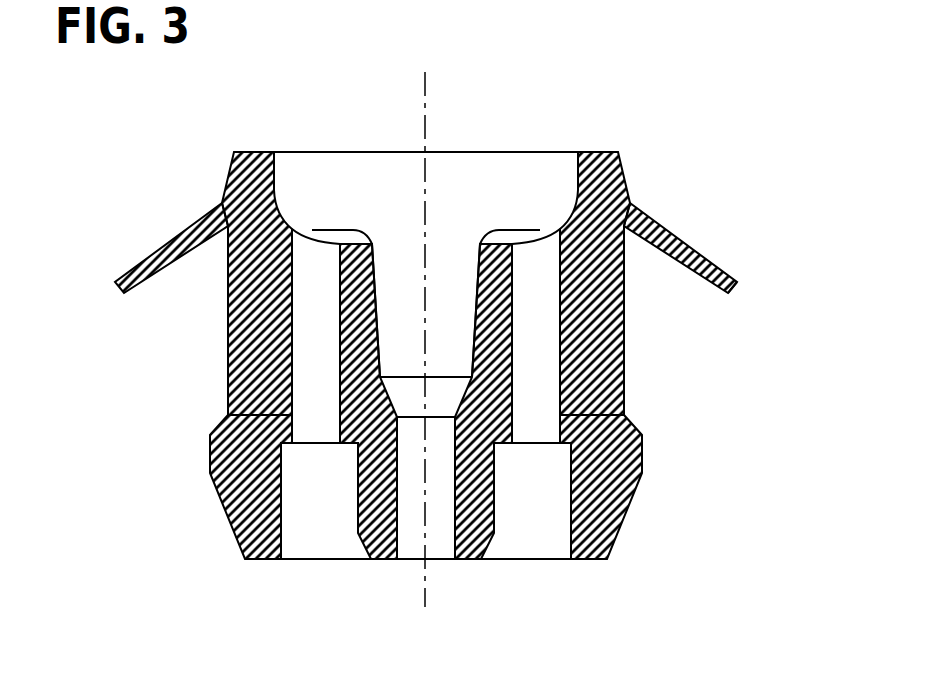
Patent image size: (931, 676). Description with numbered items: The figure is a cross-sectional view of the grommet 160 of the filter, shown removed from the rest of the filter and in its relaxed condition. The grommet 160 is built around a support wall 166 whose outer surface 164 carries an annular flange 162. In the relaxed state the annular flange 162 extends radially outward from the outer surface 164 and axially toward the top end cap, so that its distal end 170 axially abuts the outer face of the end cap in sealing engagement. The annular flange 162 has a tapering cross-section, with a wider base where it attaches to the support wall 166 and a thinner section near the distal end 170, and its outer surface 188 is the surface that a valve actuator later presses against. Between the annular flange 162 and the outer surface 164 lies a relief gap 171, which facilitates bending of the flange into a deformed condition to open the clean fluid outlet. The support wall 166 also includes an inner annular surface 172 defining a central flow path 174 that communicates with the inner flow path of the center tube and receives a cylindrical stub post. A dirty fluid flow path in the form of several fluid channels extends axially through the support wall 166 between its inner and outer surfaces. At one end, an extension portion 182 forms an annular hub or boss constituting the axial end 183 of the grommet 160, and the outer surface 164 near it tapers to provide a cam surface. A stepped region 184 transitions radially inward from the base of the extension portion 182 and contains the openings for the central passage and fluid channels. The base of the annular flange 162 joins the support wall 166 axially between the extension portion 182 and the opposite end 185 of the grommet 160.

The grommet 160 is at (547, 112).
The annular flange 162 is at (690, 247).
The outer surface 164 is at (625, 338).
The support wall 166 is at (615, 477).
The distal end 170 is at (738, 287).
The relief gap 171 is at (182, 287).
The inner annular surface 172 is at (380, 318).
The central flow path 174 is at (443, 540).
The extension portion 182 is at (603, 151).
The axial end 183 is at (254, 151).
The stepped region 184 is at (548, 190).
The opposite end 185 is at (598, 561).
The outer surface 188 is at (152, 255).